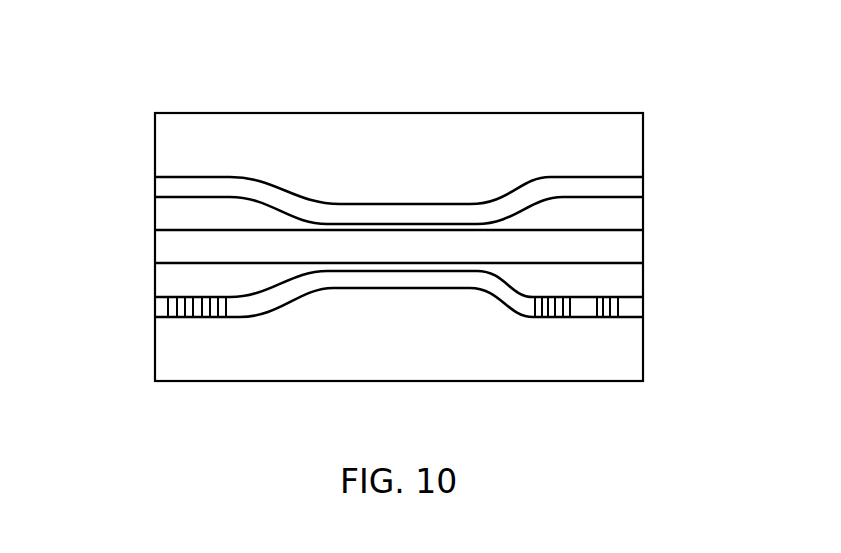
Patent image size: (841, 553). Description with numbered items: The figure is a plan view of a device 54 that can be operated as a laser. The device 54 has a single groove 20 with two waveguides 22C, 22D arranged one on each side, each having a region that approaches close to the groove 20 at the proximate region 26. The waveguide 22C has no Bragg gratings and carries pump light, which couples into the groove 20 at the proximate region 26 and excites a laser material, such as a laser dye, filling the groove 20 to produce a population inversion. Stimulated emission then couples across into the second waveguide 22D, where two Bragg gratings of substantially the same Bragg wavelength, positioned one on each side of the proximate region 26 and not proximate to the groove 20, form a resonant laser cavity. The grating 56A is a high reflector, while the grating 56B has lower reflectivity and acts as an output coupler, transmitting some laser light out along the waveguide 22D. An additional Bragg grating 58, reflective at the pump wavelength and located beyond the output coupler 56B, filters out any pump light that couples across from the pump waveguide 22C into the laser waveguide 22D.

The device 54 is at (648, 100).
The waveguide 22C is at (632, 188).
The groove 20 is at (632, 248).
The waveguide 22D is at (632, 305).
The grating 56A is at (167, 305).
The grating 56B is at (553, 318).
The additional Bragg grating 58 is at (608, 318).
The proximate region 26 is at (515, 328).